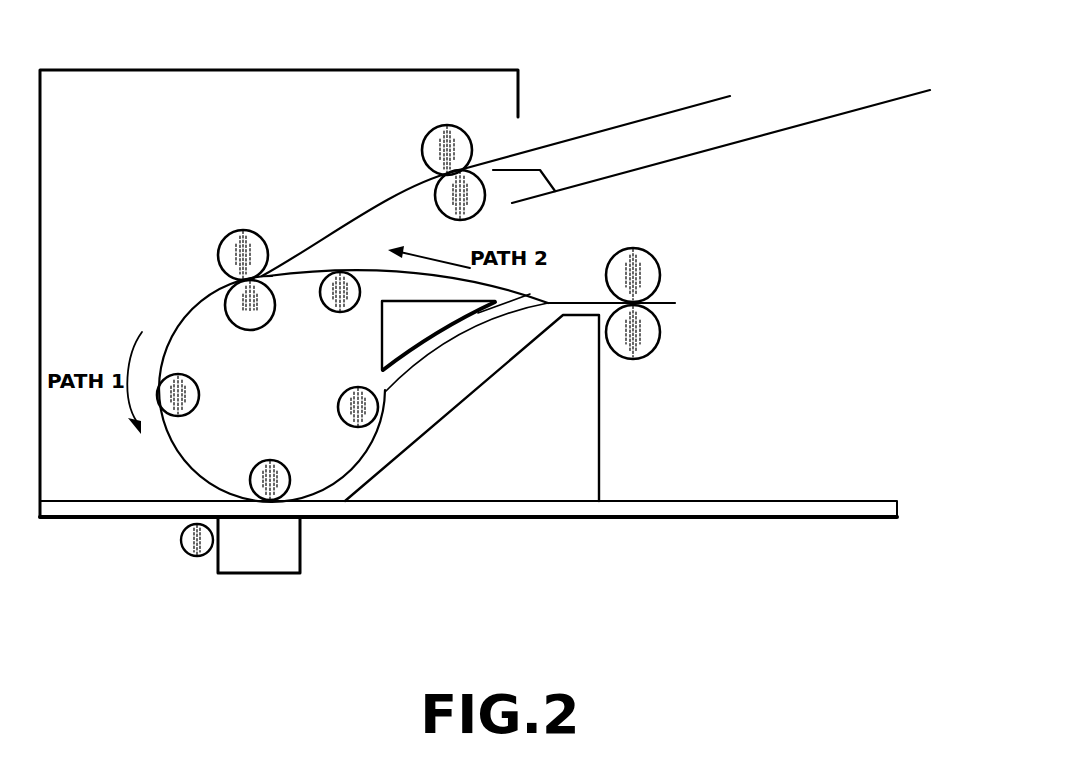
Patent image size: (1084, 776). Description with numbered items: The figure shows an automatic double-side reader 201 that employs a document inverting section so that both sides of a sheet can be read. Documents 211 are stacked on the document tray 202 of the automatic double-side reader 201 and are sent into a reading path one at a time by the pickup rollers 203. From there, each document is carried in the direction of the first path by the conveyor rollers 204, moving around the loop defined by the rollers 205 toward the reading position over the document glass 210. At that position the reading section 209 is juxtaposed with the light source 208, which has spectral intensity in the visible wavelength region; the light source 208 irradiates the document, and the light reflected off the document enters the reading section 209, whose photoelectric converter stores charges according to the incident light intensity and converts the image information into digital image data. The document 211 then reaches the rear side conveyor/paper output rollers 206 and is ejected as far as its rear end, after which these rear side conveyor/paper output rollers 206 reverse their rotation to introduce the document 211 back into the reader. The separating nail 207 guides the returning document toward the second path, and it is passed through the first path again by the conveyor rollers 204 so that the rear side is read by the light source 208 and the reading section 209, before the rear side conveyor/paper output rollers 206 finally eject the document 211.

The automatic double-side reader 201 is at (152, 70).
The document tray 202 is at (815, 120).
The pickup rollers 203 is at (425, 141).
The conveyor rollers 204 is at (239, 233).
The rollers 205 is at (330, 310).
The rear side conveyor/paper output rollers 206 is at (660, 268).
The separating nail 207 is at (530, 295).
The light source 208 is at (182, 553).
The reading section 209 is at (254, 576).
The document glass 210 is at (718, 518).
The document 211 is at (633, 120).